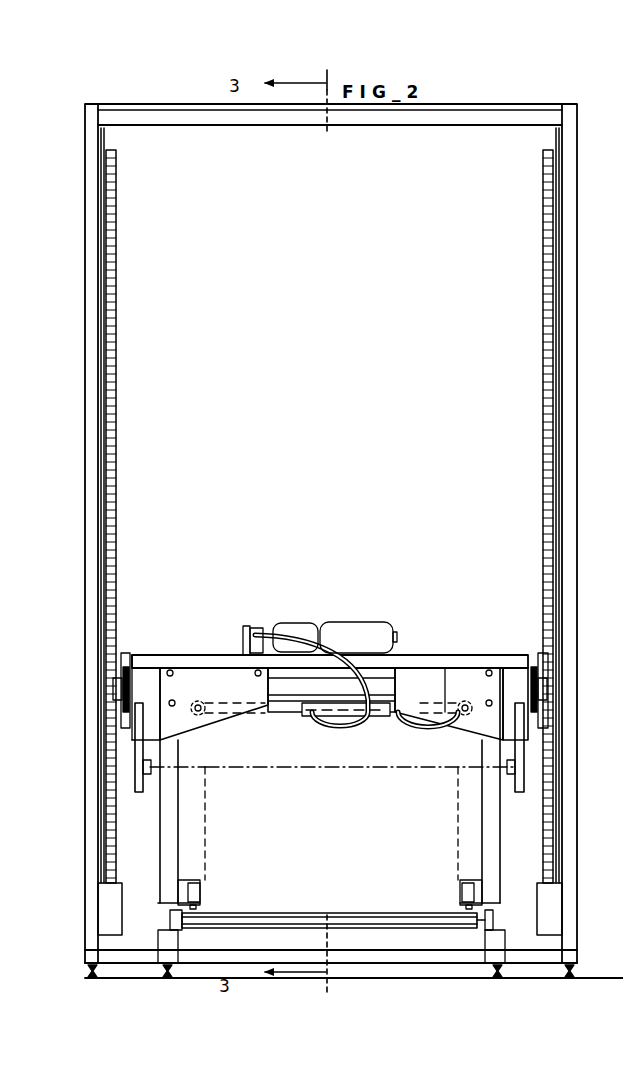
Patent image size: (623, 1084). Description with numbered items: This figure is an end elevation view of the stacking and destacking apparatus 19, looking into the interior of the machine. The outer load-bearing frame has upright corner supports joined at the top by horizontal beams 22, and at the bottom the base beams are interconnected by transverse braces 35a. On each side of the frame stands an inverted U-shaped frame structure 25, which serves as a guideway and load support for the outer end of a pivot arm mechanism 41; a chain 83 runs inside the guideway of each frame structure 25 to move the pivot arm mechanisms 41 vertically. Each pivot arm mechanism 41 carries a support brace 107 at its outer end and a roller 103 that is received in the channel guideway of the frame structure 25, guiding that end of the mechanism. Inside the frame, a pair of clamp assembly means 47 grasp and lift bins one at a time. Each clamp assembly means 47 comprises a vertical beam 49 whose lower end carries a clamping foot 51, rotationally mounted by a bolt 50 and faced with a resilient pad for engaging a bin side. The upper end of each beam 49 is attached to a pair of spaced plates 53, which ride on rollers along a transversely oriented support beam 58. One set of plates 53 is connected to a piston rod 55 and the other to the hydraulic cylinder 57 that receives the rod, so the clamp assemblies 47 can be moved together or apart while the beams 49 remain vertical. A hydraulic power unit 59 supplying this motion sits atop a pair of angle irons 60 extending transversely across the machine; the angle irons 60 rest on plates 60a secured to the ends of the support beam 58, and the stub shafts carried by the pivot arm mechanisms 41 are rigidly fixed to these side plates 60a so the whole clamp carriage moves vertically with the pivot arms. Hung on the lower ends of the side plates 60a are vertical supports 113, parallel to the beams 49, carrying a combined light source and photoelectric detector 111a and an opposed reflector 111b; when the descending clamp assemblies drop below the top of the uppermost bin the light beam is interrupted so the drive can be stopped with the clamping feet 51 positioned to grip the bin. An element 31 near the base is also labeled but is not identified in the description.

The frame apparatus 19 is at (80, 171).
The horizontal beam 22 is at (262, 124).
The inverted U-shaped frame structure 25 is at (117, 186).
The chain 83 is at (118, 326).
The pivot arm mechanism 41 is at (129, 654).
The angle iron 60 is at (205, 656).
The side plate 60a is at (136, 735).
The support brace 107 is at (124, 668).
The roller 103 is at (116, 687).
The vertical support 113 is at (146, 768).
The spaced plates 53 is at (460, 724).
The support beam 58 is at (470, 690).
The piston rod 55 is at (294, 712).
The hydraulic cylinder 57 is at (373, 718).
The hydraulic power unit 59 is at (320, 622).
The combined light source and photoelectric detector 111a is at (152, 768).
The reflector 111b is at (508, 768).
The clamp assembly means 47 is at (181, 804).
The vertical beam 49 is at (179, 829).
The bolt 50 is at (196, 880).
The clamping foot 51 is at (201, 892).
The roller 31 is at (168, 920).
The transverse brace 35a is at (106, 956).